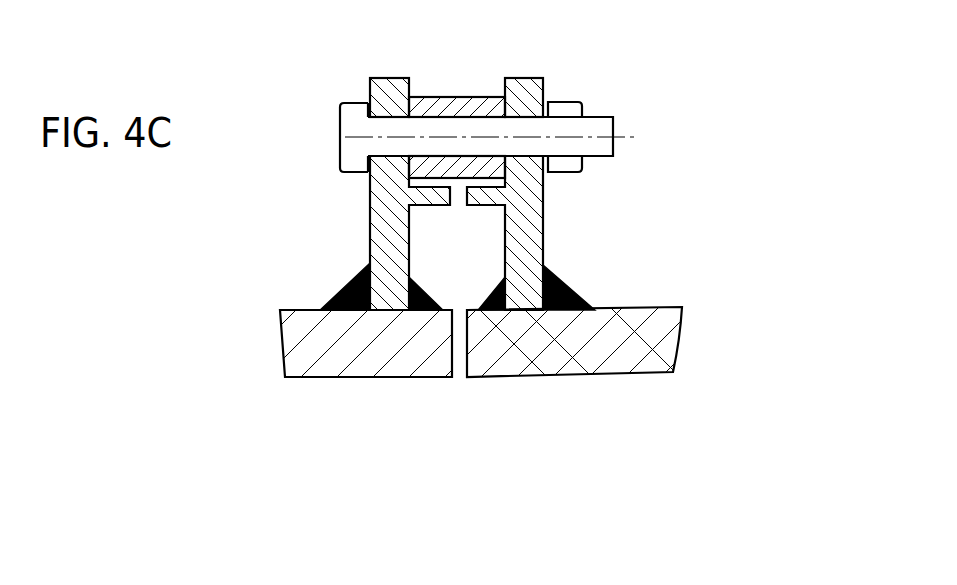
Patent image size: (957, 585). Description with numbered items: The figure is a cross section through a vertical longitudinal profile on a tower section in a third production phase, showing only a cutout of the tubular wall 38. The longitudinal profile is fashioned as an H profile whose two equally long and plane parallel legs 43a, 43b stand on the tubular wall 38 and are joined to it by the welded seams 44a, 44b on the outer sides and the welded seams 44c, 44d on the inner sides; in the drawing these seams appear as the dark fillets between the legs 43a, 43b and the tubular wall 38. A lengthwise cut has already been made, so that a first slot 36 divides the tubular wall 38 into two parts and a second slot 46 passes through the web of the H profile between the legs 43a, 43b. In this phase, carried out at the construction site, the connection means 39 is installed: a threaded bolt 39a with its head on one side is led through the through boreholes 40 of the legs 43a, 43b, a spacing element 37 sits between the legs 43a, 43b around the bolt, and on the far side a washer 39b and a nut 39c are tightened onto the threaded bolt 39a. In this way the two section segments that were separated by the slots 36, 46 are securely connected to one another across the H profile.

The slot 36 is at (459, 386).
The spacing element 37 is at (473, 99).
The tubular wall 38 is at (660, 317).
The connection means 39 is at (652, 100).
The threaded bolt 39a is at (340, 115).
The washer 39b is at (547, 98).
The nut 39c is at (562, 163).
The through borehole 40 is at (381, 105).
The leg 43a is at (515, 247).
The leg 43b is at (382, 237).
The welded seam 44a is at (587, 313).
The welded seam 44b is at (343, 312).
The welded seam 44c is at (502, 313).
The welded seam 44d is at (414, 312).
The slot 46 is at (452, 212).